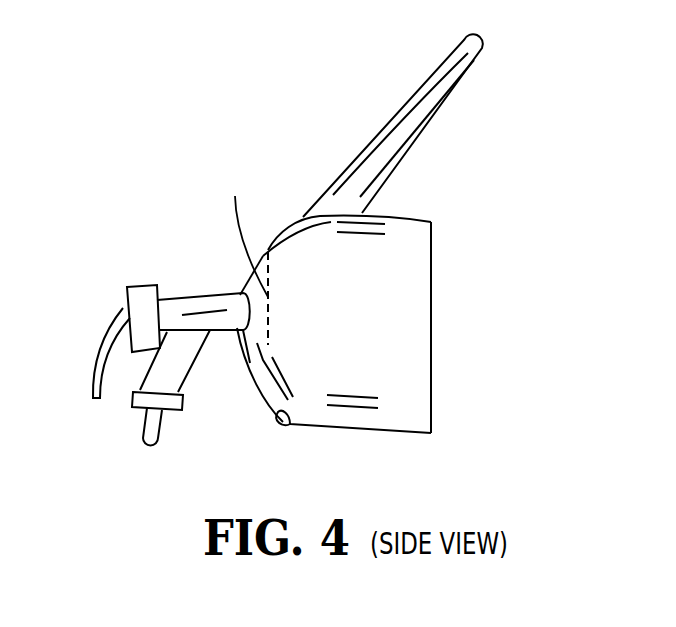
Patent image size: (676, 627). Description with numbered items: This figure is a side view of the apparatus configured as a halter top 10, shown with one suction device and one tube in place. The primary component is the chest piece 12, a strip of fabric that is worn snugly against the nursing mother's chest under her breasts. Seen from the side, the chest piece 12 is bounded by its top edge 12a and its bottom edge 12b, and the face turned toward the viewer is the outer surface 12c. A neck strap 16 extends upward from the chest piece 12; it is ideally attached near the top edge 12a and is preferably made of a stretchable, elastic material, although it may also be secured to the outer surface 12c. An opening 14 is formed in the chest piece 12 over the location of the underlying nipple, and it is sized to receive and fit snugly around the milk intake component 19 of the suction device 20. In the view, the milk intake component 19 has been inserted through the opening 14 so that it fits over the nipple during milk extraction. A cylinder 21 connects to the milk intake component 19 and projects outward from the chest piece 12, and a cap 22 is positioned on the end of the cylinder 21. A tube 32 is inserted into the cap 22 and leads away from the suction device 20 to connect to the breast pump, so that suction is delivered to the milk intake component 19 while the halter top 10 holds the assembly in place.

The halter top 10 is at (346, 108).
The chest piece 12 is at (438, 215).
The top edge 12a is at (390, 218).
The bottom edge 12b is at (320, 428).
The outer surface 12c is at (395, 408).
The opening 14 is at (250, 323).
The neck strap 16 is at (452, 90).
The milk intake component 19 is at (247, 232).
The suction device 20 is at (128, 258).
The cylinder 21 is at (173, 373).
The cap 22 is at (143, 293).
The tube 32 is at (99, 400).